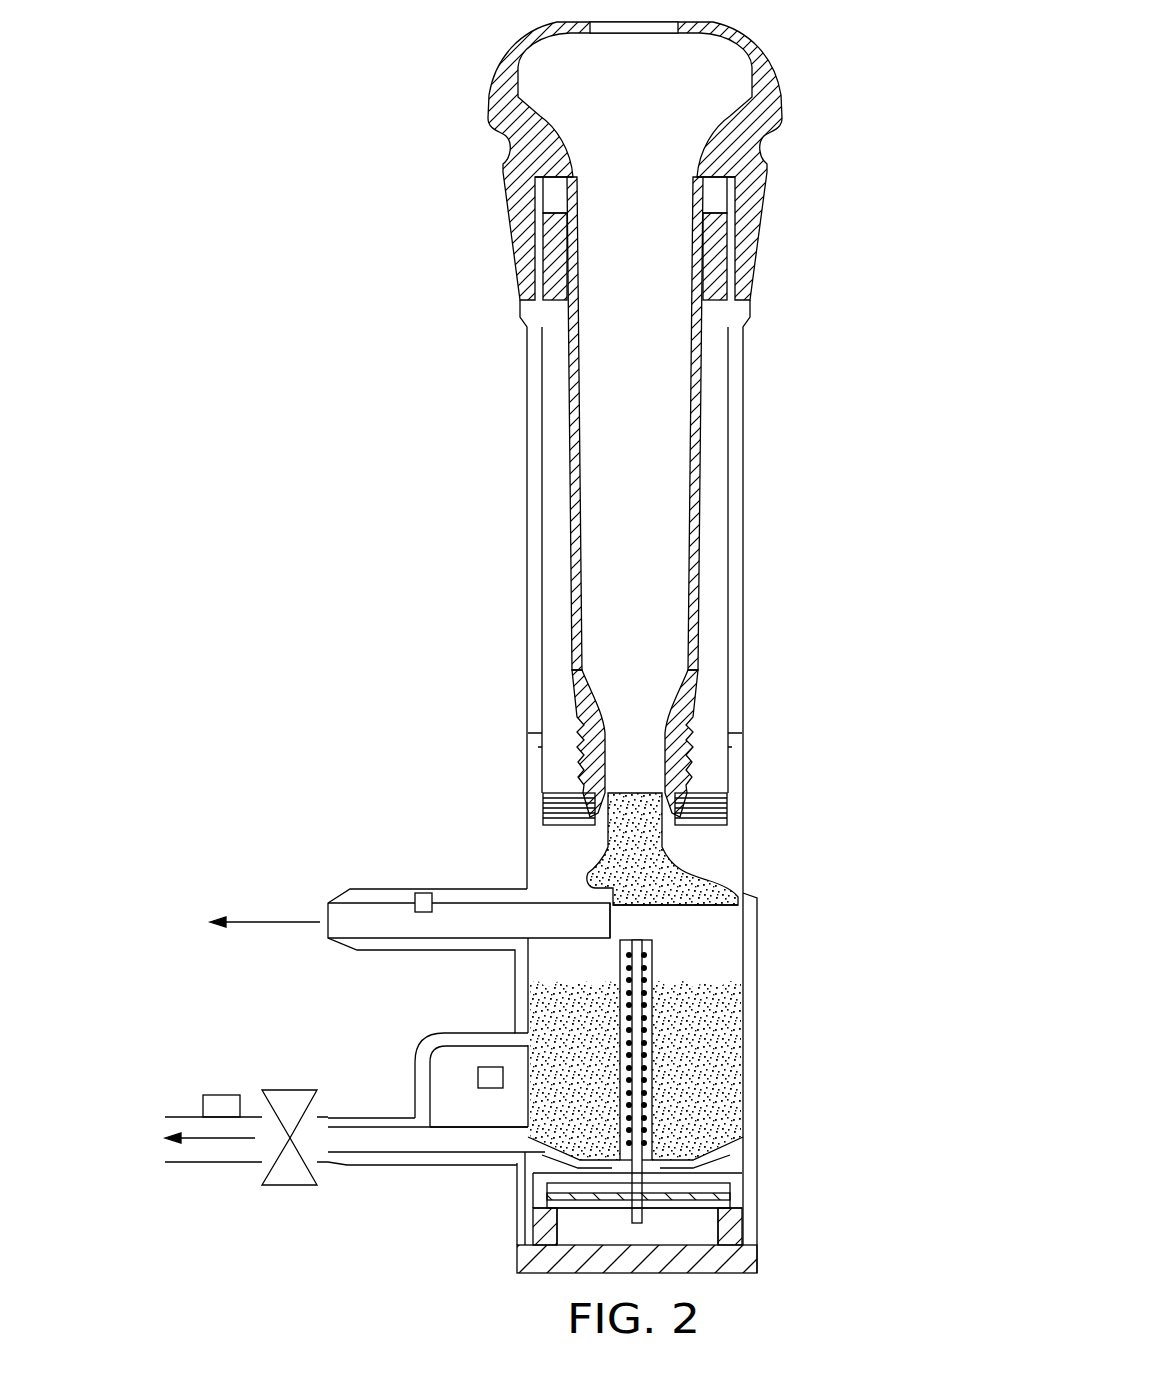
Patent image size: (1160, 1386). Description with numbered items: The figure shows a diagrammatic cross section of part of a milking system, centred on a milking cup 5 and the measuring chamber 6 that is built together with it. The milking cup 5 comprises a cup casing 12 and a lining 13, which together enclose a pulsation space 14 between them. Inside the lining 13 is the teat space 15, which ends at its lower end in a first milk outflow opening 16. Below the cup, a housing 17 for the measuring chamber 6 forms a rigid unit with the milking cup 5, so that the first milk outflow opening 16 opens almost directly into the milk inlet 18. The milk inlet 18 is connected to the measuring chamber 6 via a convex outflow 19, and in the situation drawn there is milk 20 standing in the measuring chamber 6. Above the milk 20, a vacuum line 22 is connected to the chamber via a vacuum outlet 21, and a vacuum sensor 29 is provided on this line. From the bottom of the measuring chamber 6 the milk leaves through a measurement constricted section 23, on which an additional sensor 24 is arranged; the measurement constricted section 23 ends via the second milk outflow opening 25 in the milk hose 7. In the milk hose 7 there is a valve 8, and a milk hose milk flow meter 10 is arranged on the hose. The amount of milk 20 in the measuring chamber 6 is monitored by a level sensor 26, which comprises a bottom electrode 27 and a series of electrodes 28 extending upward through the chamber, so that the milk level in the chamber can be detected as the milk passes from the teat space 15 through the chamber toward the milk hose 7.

The milking cup 5 is at (452, 340).
The measuring chamber 6 is at (685, 943).
The milk hose 7 is at (377, 1117).
The valve 8 is at (288, 1098).
The milk hose milk flow meter 10 is at (220, 1103).
The cup casing 12 is at (733, 340).
The lining 13 is at (697, 435).
The pulsation space 14 is at (712, 515).
The teat space 15 is at (637, 155).
The first milk outflow opening 16 is at (633, 767).
The housing 17 is at (748, 1020).
The milk inlet 18 is at (640, 835).
The convex outflow 19 is at (640, 883).
The milk 20 is at (707, 1057).
The vacuum outlet 21 is at (613, 920).
The vacuum line 22 is at (377, 899).
The measurement constricted section 23 is at (460, 1088).
The additional sensor 24 is at (490, 1077).
The second milk outflow opening 25 is at (473, 1138).
The level sensor 26 is at (625, 1120).
The bottom electrode 27 is at (644, 1145).
The electrodes 28 is at (644, 1043).
The vacuum sensor 29 is at (422, 899).